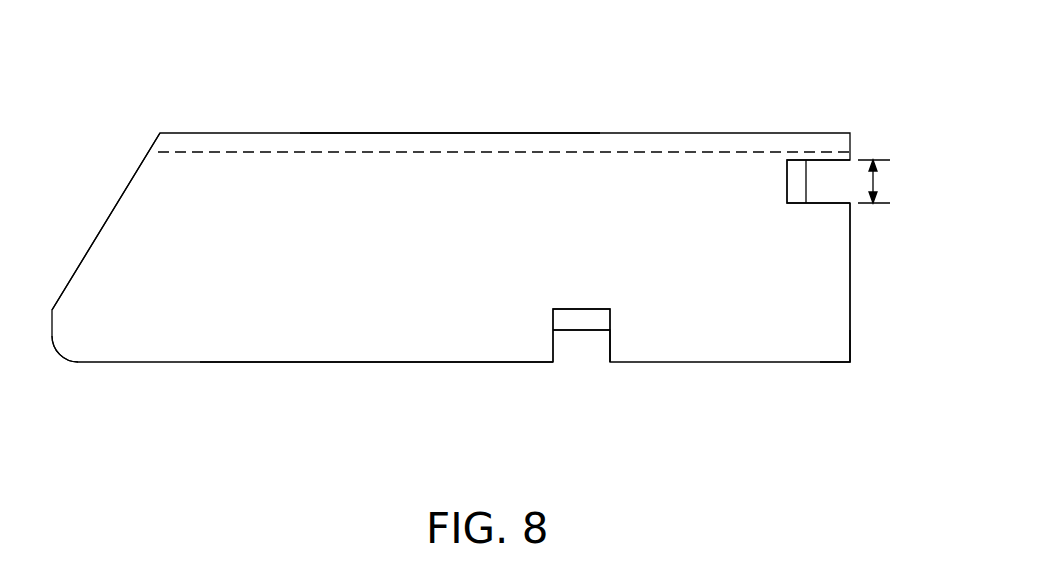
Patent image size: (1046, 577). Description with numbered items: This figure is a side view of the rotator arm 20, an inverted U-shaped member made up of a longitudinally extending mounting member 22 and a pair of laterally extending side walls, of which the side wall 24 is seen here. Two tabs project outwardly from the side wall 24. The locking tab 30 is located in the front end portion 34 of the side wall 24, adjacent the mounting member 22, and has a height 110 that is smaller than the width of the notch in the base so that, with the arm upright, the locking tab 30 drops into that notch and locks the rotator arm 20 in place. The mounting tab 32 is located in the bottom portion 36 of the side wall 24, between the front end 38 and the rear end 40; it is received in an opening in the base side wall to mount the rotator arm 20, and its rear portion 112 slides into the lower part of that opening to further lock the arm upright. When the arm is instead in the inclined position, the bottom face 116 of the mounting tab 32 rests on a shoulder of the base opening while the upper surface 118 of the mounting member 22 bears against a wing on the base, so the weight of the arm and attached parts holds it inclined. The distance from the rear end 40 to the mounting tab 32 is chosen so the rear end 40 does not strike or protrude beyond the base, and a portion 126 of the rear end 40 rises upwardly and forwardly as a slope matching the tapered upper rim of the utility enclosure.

The rotator arm 20 is at (253, 110).
The mounting member 22 is at (438, 143).
The side wall 24 is at (274, 271).
The locking tab 30 is at (787, 181).
The mounting tab 32 is at (588, 318).
The front end portion 34 is at (822, 270).
The bottom portion 36 is at (501, 350).
The front end 38 is at (850, 323).
The rear end 40 is at (50, 332).
The height of the locking tab 110 is at (873, 183).
The rear portion of the mounting tab 112 is at (562, 319).
The bottom face of the mounting tab 116 is at (583, 332).
The upper surface of the mounting member 118 is at (575, 134).
The sloped portion of the rear end 126 is at (110, 213).